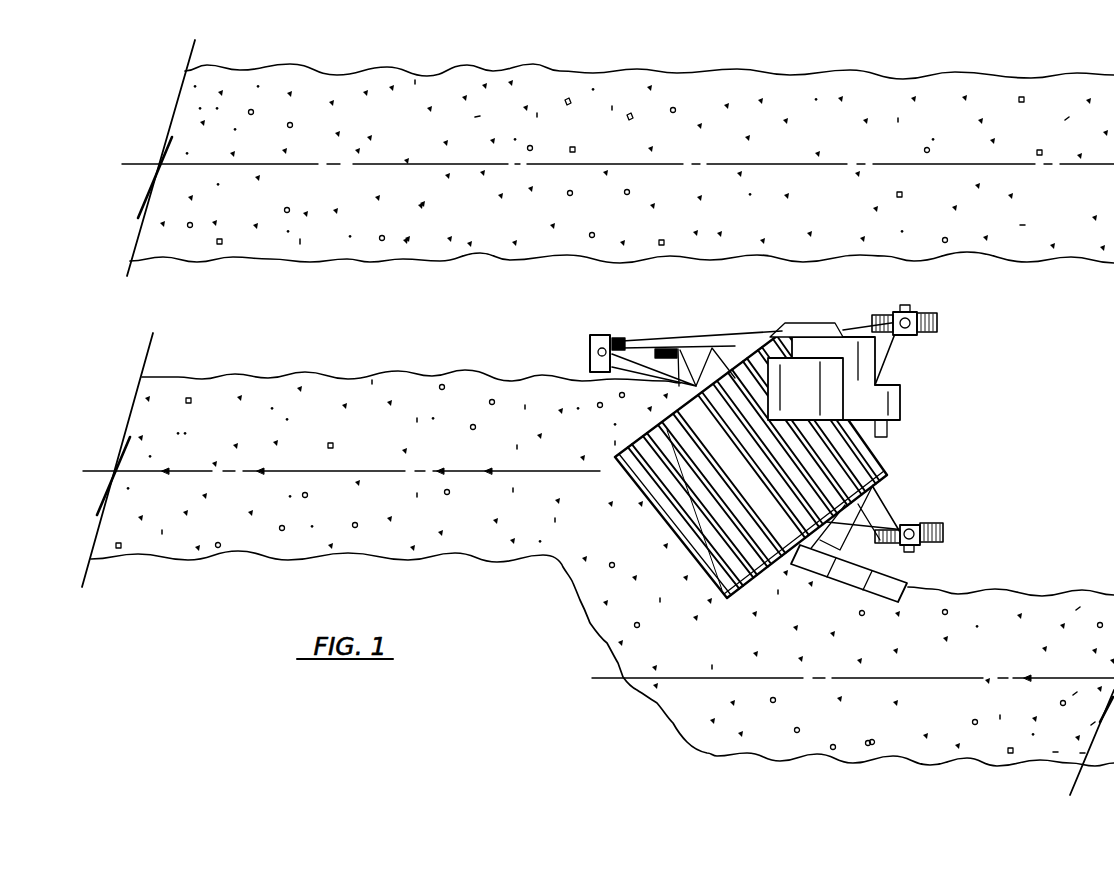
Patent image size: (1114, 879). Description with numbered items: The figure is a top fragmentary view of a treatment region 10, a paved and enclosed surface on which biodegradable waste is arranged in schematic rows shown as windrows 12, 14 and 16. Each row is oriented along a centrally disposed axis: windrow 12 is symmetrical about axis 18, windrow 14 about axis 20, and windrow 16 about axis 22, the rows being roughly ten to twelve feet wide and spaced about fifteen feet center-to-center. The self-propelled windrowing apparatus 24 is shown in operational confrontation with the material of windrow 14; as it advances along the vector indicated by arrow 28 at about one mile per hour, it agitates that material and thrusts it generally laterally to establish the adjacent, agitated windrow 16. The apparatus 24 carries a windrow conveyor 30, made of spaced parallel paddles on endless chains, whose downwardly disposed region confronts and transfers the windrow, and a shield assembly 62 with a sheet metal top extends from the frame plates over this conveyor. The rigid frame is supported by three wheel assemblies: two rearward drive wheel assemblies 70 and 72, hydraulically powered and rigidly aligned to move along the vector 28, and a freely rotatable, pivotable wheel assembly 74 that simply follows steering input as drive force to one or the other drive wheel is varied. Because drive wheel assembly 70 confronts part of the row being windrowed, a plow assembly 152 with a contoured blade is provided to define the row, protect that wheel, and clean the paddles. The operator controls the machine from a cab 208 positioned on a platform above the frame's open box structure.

The treatment region 10 is at (988, 70).
The windrow 12 is at (676, 73).
The windrow 14 is at (271, 541).
The windrow 16 is at (883, 728).
The axis 18 is at (1073, 167).
The axis 20 is at (357, 470).
The axis 22 is at (945, 678).
The windrowing apparatus 24 is at (625, 330).
The arrow 28 is at (937, 432).
The windrow conveyor 30 is at (771, 461).
The shield assembly 62 is at (660, 523).
The drive wheel assembly 70 is at (948, 533).
The drive wheel assembly 72 is at (940, 322).
The wheel assembly 74 is at (588, 350).
The plow assembly 152 is at (864, 586).
The cab 208 is at (803, 380).